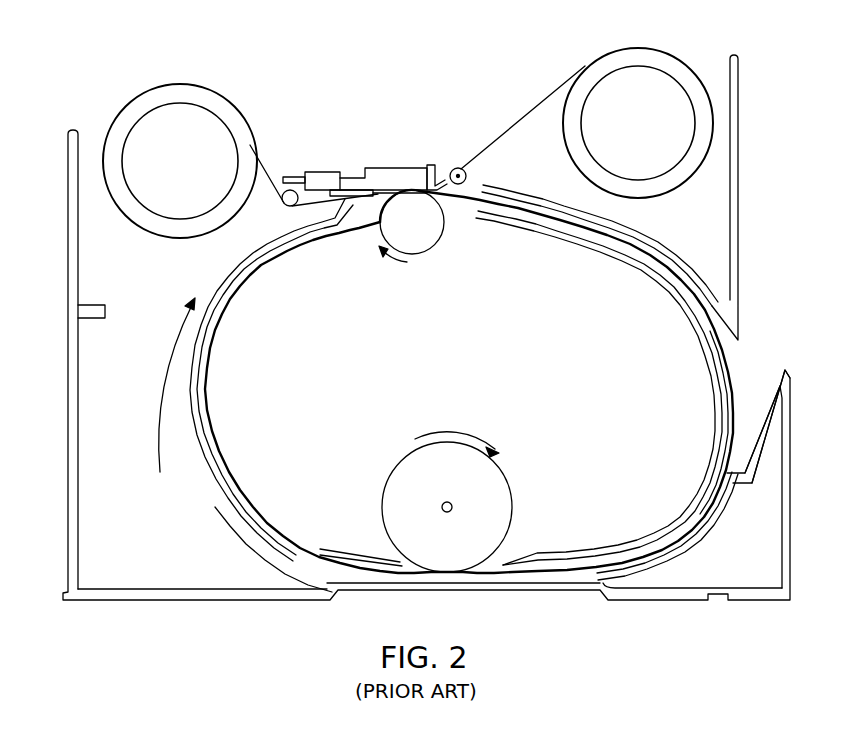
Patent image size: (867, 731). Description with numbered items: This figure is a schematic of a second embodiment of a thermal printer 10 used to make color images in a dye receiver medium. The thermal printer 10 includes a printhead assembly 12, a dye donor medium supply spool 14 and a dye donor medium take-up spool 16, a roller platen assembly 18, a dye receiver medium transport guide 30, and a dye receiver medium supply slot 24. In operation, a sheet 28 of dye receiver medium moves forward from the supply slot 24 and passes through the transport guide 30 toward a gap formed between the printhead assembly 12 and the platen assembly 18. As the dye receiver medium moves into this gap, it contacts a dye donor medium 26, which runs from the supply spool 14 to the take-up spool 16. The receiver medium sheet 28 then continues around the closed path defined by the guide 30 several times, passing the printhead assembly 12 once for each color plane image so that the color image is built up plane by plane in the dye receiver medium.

The thermal printer 10 is at (88, 64).
The printhead assembly 12 is at (388, 168).
The dye donor medium supply spool 14 is at (165, 116).
The dye donor medium take-up spool 16 is at (608, 88).
The roller platen assembly 18 is at (432, 240).
The dye receiver medium supply slot 24 is at (752, 392).
The dye donor medium 26 is at (256, 152).
The sheet of dye receiver medium 28 is at (643, 547).
The dye receiver medium transport guide 30 is at (232, 316).